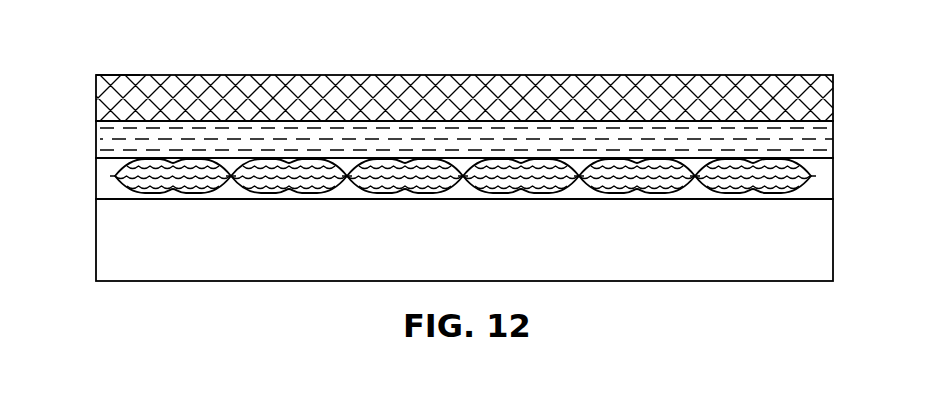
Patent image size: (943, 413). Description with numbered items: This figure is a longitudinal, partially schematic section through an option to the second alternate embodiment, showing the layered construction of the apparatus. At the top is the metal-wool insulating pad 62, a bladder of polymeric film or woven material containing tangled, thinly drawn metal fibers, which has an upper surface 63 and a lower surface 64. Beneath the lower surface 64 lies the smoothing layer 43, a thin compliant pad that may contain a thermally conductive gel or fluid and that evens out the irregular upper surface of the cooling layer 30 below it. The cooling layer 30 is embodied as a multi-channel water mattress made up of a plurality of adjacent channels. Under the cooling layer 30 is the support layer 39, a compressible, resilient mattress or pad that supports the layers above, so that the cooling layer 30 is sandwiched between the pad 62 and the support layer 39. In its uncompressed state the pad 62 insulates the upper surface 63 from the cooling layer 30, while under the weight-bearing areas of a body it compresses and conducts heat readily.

The metal-wool insulating pad 62 is at (842, 75).
The smoothing layer 43 is at (842, 121).
The cooling layer 30 is at (842, 158).
The support layer 39 is at (842, 199).
The upper surface 63 is at (118, 75).
The lower surface 64 is at (110, 120).